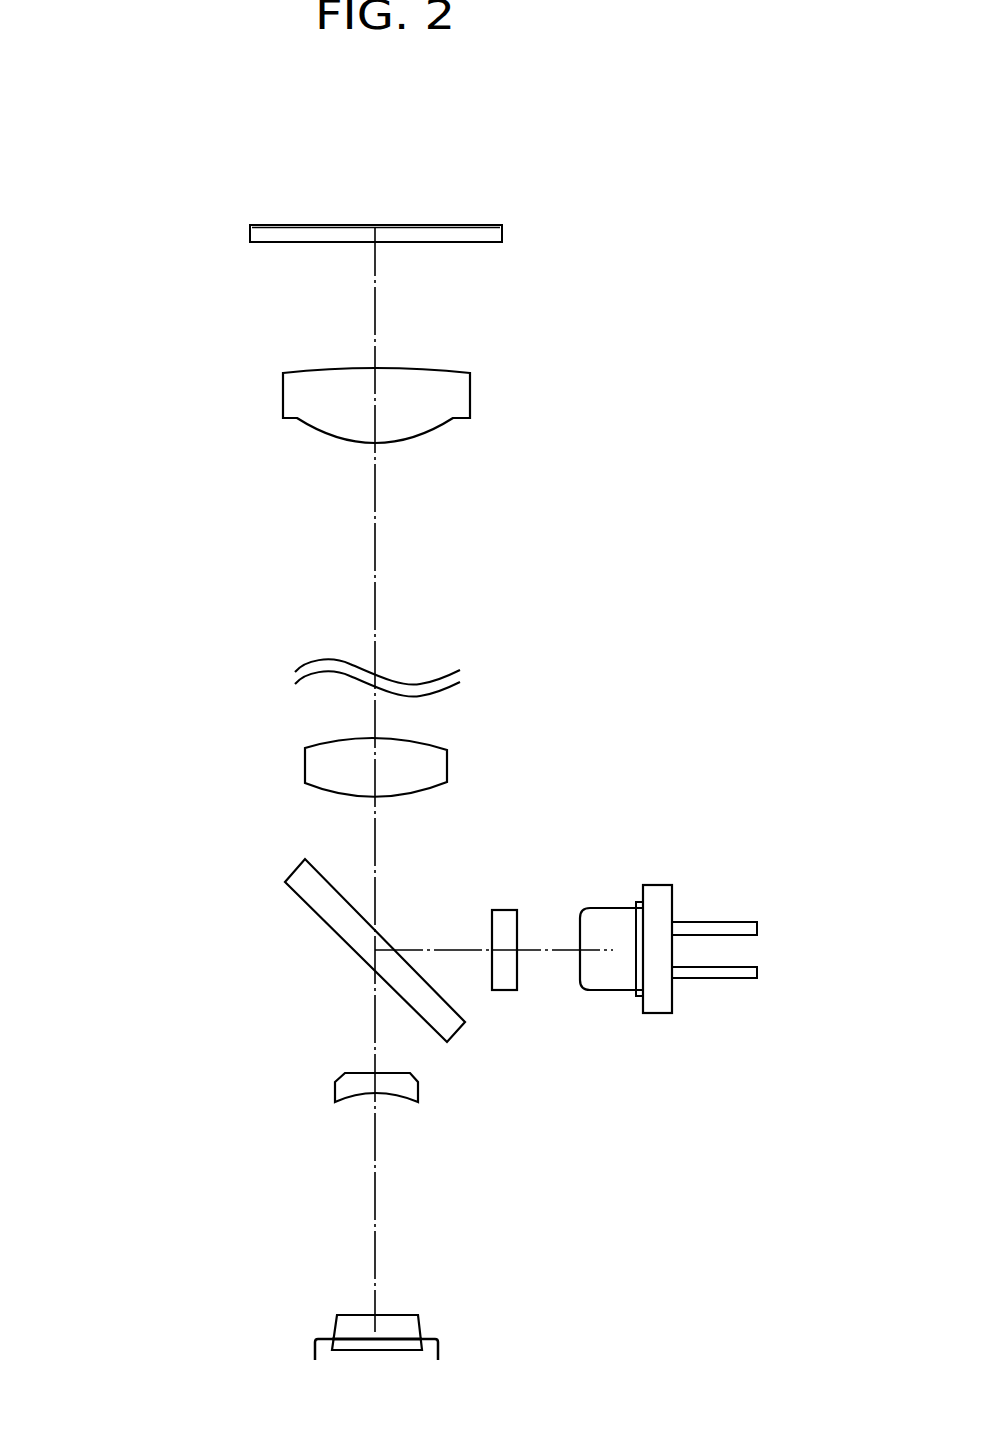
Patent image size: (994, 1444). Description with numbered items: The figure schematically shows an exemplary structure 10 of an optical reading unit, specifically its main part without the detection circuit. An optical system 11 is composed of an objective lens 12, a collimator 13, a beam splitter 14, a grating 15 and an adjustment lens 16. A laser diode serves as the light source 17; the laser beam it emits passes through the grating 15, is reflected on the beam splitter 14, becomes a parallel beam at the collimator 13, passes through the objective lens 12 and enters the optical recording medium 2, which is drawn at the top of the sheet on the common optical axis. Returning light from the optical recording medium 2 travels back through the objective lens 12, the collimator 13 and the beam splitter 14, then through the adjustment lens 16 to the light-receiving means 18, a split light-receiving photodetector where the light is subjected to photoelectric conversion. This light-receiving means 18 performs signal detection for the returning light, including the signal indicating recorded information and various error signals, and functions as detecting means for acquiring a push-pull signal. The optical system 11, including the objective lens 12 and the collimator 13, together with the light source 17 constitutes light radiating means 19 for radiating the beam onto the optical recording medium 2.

The structure of the optical reading unit 10 is at (190, 170).
The optical recording medium 2 is at (282, 225).
The optical system 11 is at (632, 425).
The objective lens 12 is at (283, 400).
The collimator 13 is at (305, 770).
The light radiating means 19 is at (634, 778).
The beam splitter 14 is at (310, 907).
The grating 15 is at (502, 992).
The adjustment lens 16 is at (335, 1090).
The light source 17 is at (612, 990).
The light-receiving means 18 is at (397, 1315).